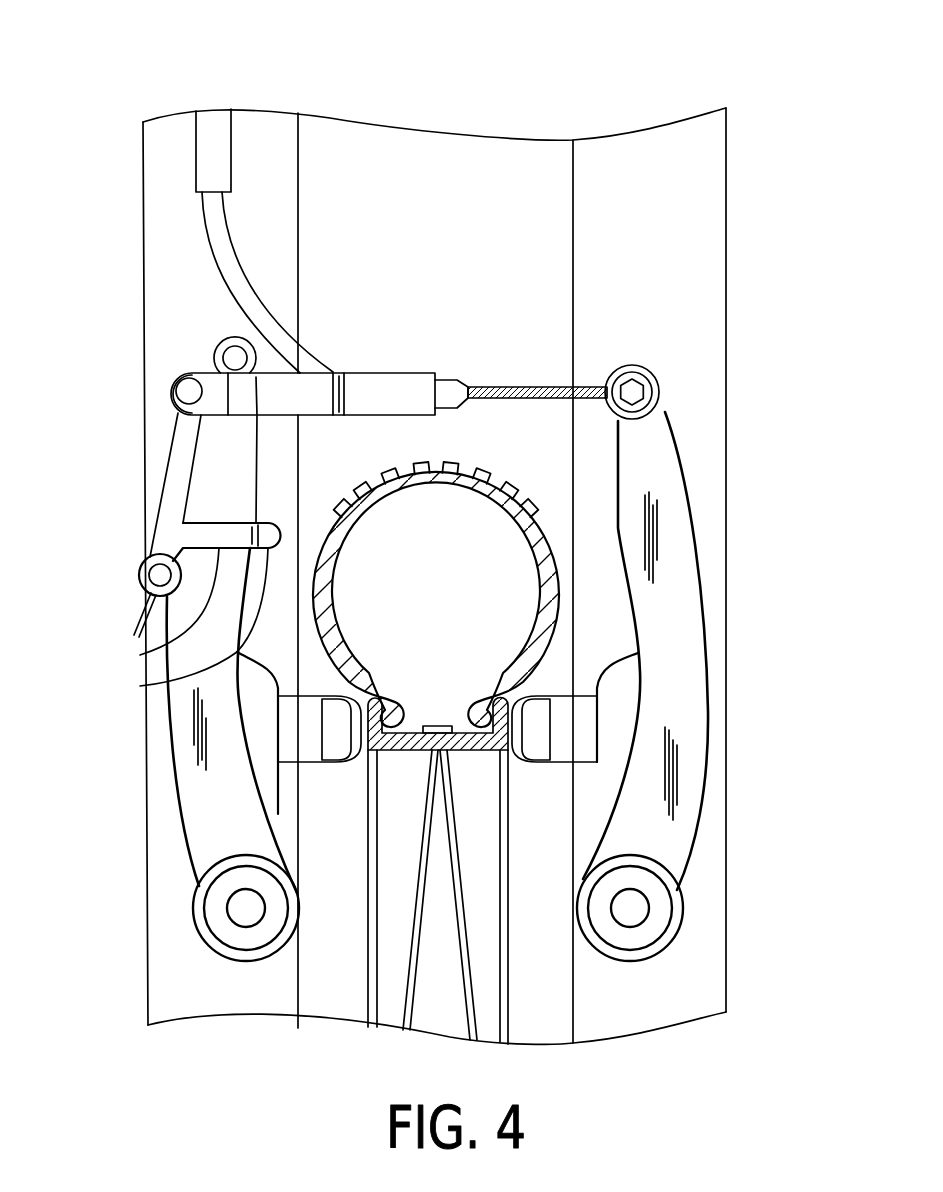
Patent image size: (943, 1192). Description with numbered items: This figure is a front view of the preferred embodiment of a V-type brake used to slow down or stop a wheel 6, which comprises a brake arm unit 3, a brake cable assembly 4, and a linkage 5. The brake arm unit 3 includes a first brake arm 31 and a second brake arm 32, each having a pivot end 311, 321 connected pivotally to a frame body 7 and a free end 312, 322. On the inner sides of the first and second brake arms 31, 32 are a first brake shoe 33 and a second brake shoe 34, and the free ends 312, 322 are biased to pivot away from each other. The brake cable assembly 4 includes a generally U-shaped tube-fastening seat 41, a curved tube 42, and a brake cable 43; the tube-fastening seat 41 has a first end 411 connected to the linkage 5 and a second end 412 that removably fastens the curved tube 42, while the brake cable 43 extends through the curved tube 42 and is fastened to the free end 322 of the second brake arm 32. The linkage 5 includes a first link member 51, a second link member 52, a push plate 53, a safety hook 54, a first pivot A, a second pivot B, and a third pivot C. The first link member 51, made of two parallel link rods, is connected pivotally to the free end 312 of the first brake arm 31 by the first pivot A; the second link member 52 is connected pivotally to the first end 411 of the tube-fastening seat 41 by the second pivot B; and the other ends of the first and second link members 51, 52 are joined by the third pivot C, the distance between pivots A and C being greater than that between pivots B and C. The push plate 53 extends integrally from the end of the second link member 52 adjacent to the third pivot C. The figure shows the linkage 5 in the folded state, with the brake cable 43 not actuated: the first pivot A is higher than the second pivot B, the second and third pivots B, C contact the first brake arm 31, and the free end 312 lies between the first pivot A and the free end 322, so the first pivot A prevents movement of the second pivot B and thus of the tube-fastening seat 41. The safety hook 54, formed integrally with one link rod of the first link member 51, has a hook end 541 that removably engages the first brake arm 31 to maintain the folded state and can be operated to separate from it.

The brake arm unit 3 is at (700, 486).
The brake cable assembly 4 is at (180, 160).
The linkage 5 is at (148, 525).
The wheel 6 is at (575, 548).
The frame body 7 is at (715, 853).
The first brake arm 31 is at (166, 734).
The second brake arm 32 is at (702, 602).
The first brake shoe 33 is at (333, 763).
The second brake shoe 34 is at (638, 653).
The tube-fastening seat 41 is at (375, 372).
The curved tube 42 is at (240, 271).
The brake cable 43 is at (517, 388).
The first link member 51 is at (218, 488).
The second link member 52 is at (164, 450).
The push plate 53 is at (145, 607).
The safety hook 54 is at (140, 655).
The pivot end 311 is at (213, 943).
The free end 312 is at (228, 343).
The pivot end 321 is at (642, 957).
The free end 322 is at (660, 375).
The first end 411 is at (172, 384).
The second end 412 is at (437, 373).
The hook end 541 is at (140, 686).
The first pivot A is at (235, 358).
The second pivot B is at (189, 391).
The third pivot C is at (160, 575).